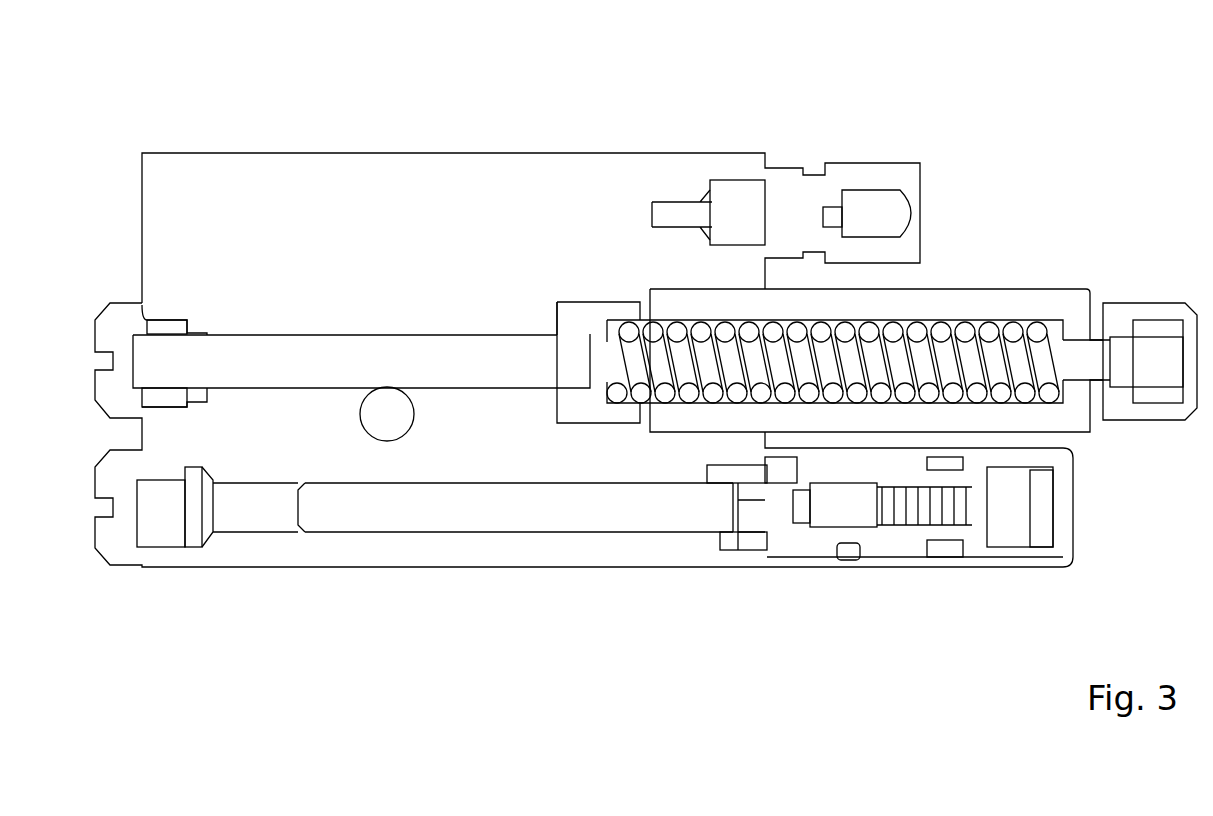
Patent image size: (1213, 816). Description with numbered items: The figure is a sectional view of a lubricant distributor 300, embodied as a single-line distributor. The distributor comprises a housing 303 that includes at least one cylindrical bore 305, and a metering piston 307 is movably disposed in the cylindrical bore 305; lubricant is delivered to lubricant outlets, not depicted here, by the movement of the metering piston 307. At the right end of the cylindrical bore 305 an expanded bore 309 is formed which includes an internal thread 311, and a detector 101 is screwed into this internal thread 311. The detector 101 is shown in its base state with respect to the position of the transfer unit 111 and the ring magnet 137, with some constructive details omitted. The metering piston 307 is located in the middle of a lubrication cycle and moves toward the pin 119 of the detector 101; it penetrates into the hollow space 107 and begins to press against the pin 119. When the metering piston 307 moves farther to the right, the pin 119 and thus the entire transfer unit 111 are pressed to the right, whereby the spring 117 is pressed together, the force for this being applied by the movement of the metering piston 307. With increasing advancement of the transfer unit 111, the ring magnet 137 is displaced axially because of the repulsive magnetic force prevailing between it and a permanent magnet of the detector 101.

The lubricant distributor 300 is at (646, 362).
The housing 303 is at (203, 162).
The cylindrical bore 305 is at (240, 520).
The metering piston 307 is at (348, 520).
The expanded bore 309 is at (715, 540).
The internal thread 311 is at (730, 540).
The hollow space 107 is at (750, 540).
The pin 119 is at (770, 510).
The transfer unit 111 is at (852, 520).
The detector 101 is at (814, 585).
The ring magnet 137 is at (935, 548).
The spring 117 is at (965, 515).